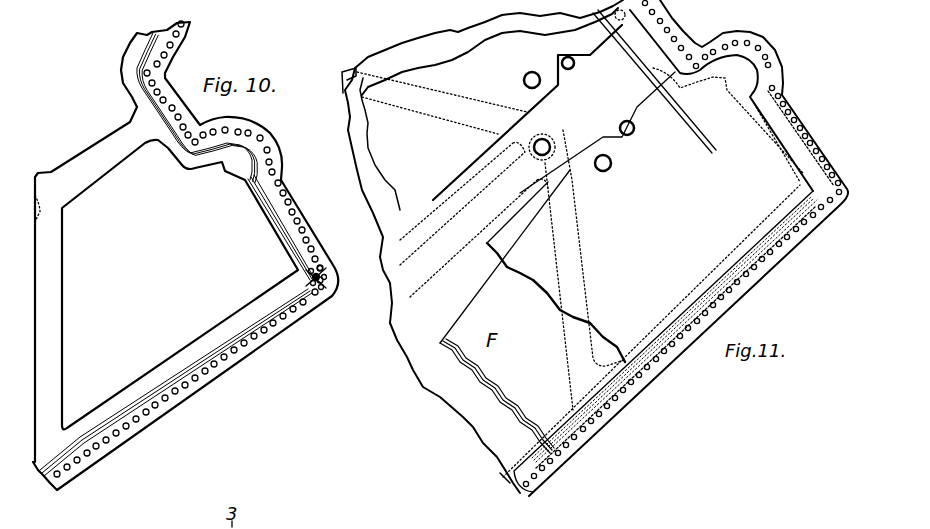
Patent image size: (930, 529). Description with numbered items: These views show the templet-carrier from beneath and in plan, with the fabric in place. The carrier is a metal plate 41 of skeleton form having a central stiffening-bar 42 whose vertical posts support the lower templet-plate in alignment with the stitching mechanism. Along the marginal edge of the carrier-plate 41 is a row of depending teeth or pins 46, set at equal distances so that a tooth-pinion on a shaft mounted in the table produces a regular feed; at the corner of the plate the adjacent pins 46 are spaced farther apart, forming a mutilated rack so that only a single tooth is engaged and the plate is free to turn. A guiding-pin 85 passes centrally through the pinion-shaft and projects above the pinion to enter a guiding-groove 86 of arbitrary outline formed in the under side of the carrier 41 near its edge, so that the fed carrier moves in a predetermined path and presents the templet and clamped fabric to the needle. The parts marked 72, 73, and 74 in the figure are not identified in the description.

In FIG. 10, the metal plate 41 is at (127, 150).
In FIG. 11, the central stiffening-bar 42 is at (393, 287).
In FIG. 10, the depending teeth or pins 46 is at (318, 303).
In FIG. 11, the depending teeth or pins 46 is at (710, 311).
In FIG. 11, the lower panel 72 is at (477, 428).
In FIG. 11, the plate 73 is at (620, 303).
In FIG. 11, the lip 74 is at (446, 262).
In FIG. 10, the guiding-pin 85 is at (327, 277).
In FIG. 10, the guiding-groove 86 is at (133, 407).